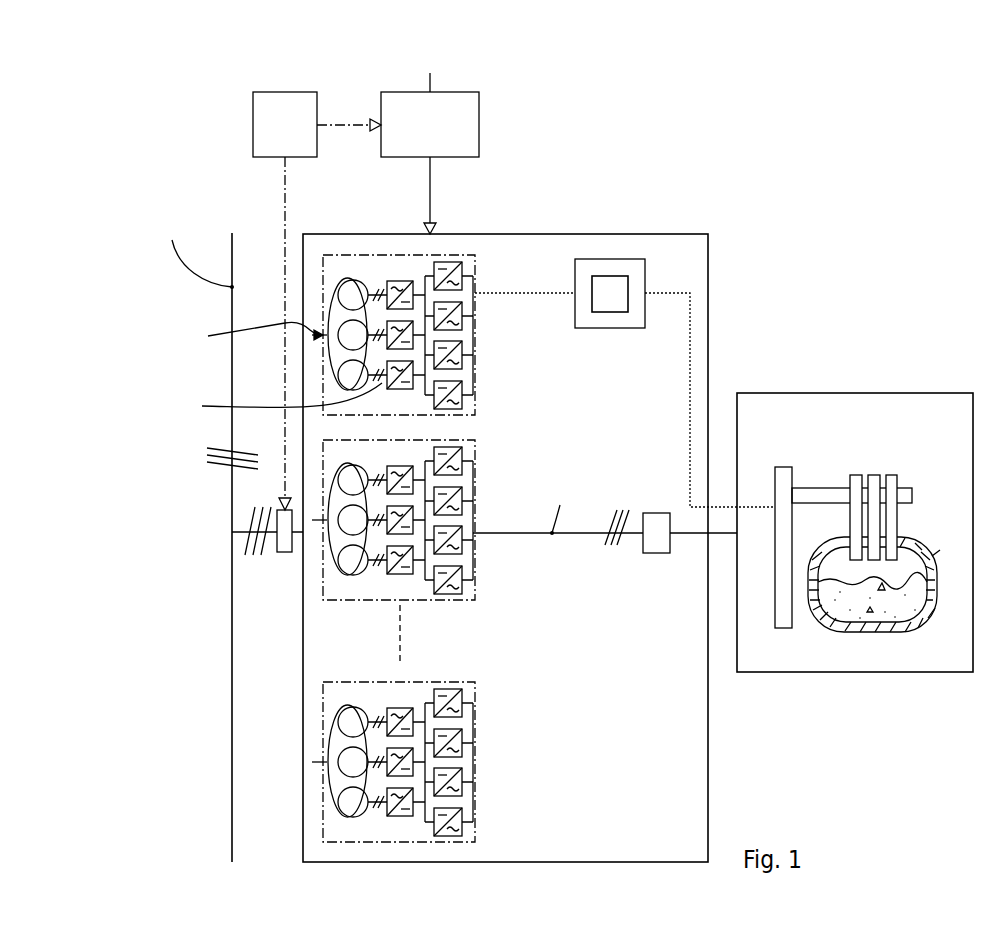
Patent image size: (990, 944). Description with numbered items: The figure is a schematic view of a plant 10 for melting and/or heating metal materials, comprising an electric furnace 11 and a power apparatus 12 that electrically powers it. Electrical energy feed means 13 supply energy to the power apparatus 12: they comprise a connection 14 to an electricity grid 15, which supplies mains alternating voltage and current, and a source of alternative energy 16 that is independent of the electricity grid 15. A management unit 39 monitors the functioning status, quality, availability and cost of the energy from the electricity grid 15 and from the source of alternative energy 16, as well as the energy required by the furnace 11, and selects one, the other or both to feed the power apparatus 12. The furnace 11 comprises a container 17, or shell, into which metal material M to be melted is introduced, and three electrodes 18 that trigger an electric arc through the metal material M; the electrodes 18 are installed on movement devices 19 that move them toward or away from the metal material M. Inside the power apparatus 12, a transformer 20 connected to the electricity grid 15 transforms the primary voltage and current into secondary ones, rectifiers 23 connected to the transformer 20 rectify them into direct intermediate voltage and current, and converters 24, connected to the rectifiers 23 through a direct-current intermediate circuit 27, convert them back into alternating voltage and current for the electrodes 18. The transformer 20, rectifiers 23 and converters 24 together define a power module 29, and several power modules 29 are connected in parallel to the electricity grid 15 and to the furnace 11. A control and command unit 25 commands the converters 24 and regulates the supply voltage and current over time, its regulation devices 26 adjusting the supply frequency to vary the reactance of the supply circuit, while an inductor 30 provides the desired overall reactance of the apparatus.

The plant 10 is at (913, 221).
The electric furnace 11 is at (782, 393).
The power apparatus 12 is at (565, 235).
The electrical energy feed means 13 is at (378, 74).
The connection 14 is at (284, 541).
The electricity grid 15 is at (232, 432).
The source of alternative energy 16 is at (430, 153).
The container 17 is at (862, 632).
The electrodes 18 is at (856, 481).
The movement devices 19 is at (783, 617).
The transformer 20 is at (350, 277).
The rectifiers 23 is at (397, 284).
The converters 24 is at (454, 268).
The control and command unit 25 is at (625, 259).
The regulation devices 26 is at (609, 295).
The intermediate circuit 27 is at (426, 279).
The power module 29 is at (476, 391).
The inductor 30 is at (655, 542).
The management unit 39 is at (317, 301).
The metal material M is at (900, 601).